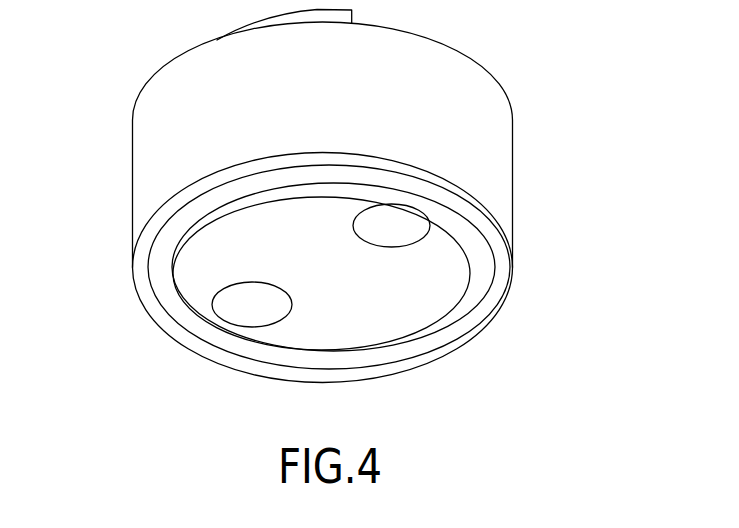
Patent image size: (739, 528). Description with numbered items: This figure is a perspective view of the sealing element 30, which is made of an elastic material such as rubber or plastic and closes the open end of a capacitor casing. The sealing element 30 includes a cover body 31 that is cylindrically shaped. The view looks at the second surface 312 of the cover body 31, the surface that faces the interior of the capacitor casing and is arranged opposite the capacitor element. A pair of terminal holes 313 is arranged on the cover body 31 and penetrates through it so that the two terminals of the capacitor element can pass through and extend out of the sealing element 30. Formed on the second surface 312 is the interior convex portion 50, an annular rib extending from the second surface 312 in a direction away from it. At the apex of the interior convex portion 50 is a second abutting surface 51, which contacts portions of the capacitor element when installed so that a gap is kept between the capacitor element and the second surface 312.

The sealing element 30 is at (320, 209).
The cover body 31 is at (492, 172).
The second surface 312 is at (503, 273).
The terminal holes 313 is at (245, 313).
The interior convex portion 50 is at (283, 267).
The second abutting surface 51 is at (160, 298).